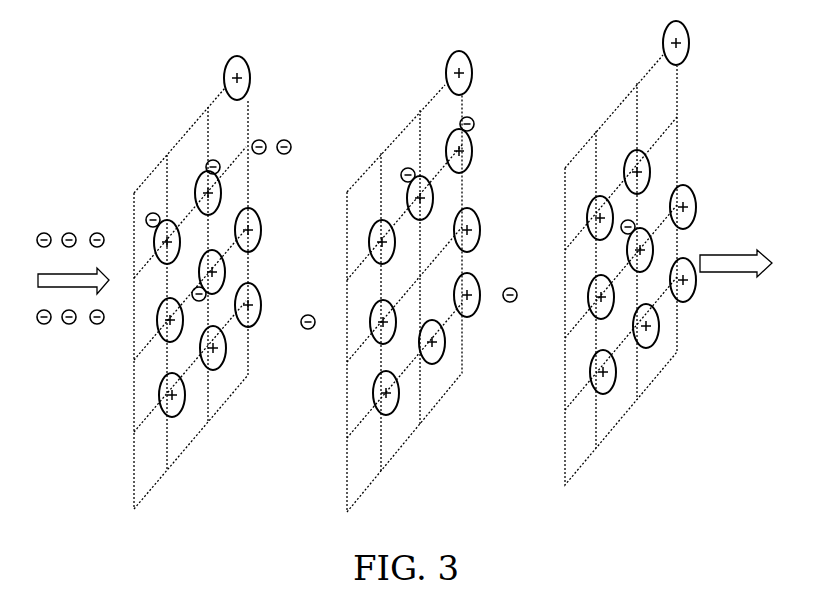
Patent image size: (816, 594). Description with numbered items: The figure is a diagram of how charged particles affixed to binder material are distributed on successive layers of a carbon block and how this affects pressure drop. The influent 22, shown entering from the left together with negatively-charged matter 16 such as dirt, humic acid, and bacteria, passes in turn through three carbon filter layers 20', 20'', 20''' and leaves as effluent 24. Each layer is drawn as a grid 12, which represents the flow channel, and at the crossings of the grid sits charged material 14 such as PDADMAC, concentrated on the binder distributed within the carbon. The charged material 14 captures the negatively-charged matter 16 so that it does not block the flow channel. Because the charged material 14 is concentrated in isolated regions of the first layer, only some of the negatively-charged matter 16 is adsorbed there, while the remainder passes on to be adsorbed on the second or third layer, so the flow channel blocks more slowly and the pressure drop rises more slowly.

The grid 12 is at (228, 130).
The charged material 14 is at (155, 328).
The negatively-charged matter 16 is at (88, 229).
The carbon filter layer 20' is at (181, 298).
The carbon filter layer 20'' is at (400, 298).
The carbon filter layer 20''' is at (610, 270).
The influent 22 is at (90, 296).
The effluent 24 is at (732, 246).